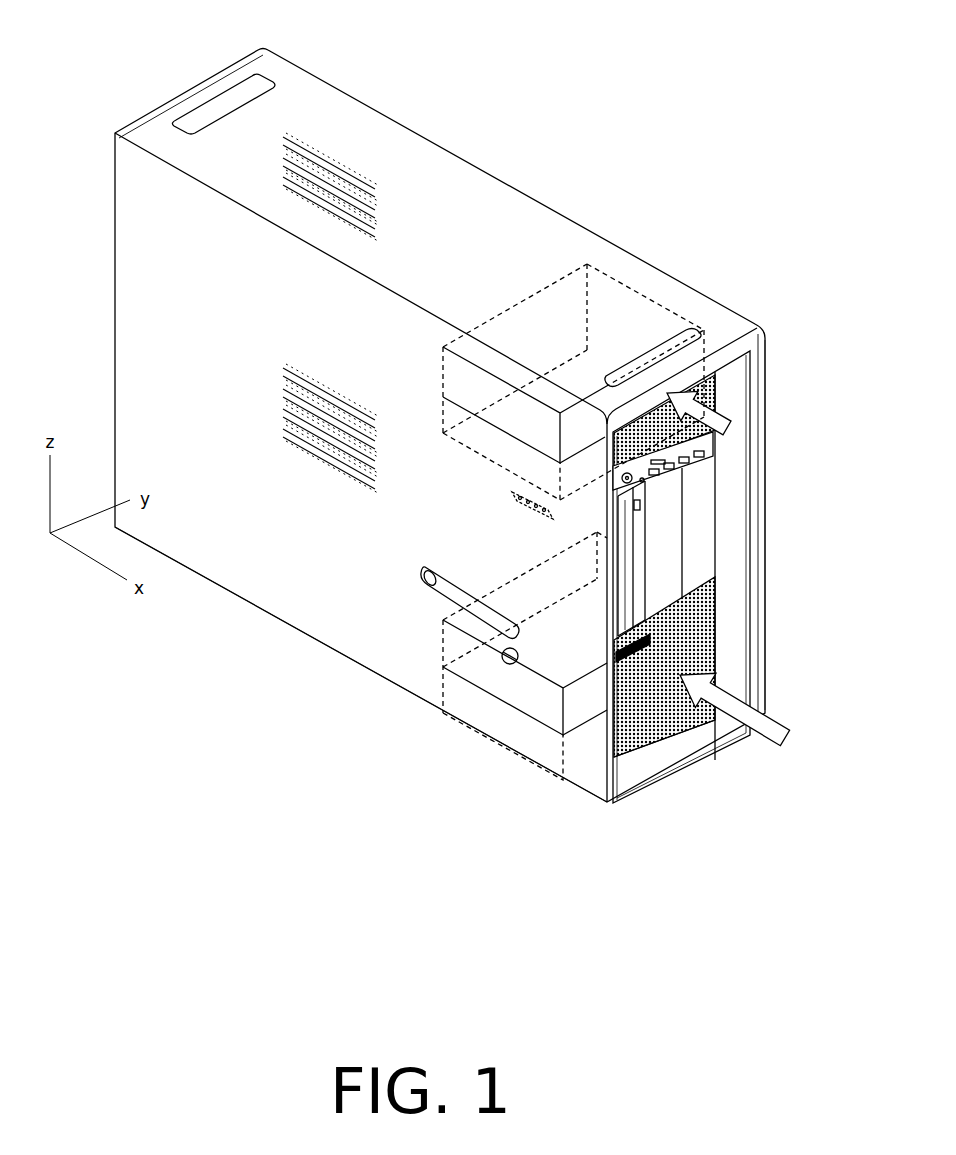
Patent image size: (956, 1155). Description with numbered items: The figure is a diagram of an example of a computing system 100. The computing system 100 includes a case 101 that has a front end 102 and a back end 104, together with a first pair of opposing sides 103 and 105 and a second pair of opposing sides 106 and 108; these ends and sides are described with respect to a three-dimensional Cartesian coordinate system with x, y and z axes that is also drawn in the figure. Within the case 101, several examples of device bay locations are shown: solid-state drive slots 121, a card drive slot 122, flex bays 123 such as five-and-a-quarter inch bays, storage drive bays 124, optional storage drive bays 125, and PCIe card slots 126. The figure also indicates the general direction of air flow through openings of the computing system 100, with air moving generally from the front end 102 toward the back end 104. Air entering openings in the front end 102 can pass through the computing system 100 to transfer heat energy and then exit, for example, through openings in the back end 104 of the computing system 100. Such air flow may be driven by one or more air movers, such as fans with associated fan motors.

The computing system 100 is at (705, 127).
The case 101 is at (383, 113).
The front end 102 is at (765, 350).
The side 103 is at (250, 513).
The back end 104 is at (256, 40).
The side 105 is at (695, 251).
The side 106 is at (337, 658).
The side 108 is at (440, 160).
The solid-state drive slots 121 is at (538, 500).
The card drive slot 122 is at (712, 446).
The flex bays 123 is at (641, 533).
The storage drive bays 124 is at (457, 647).
The optional storage drive bays 125 is at (458, 372).
The PCIe card slots 126 is at (283, 430).